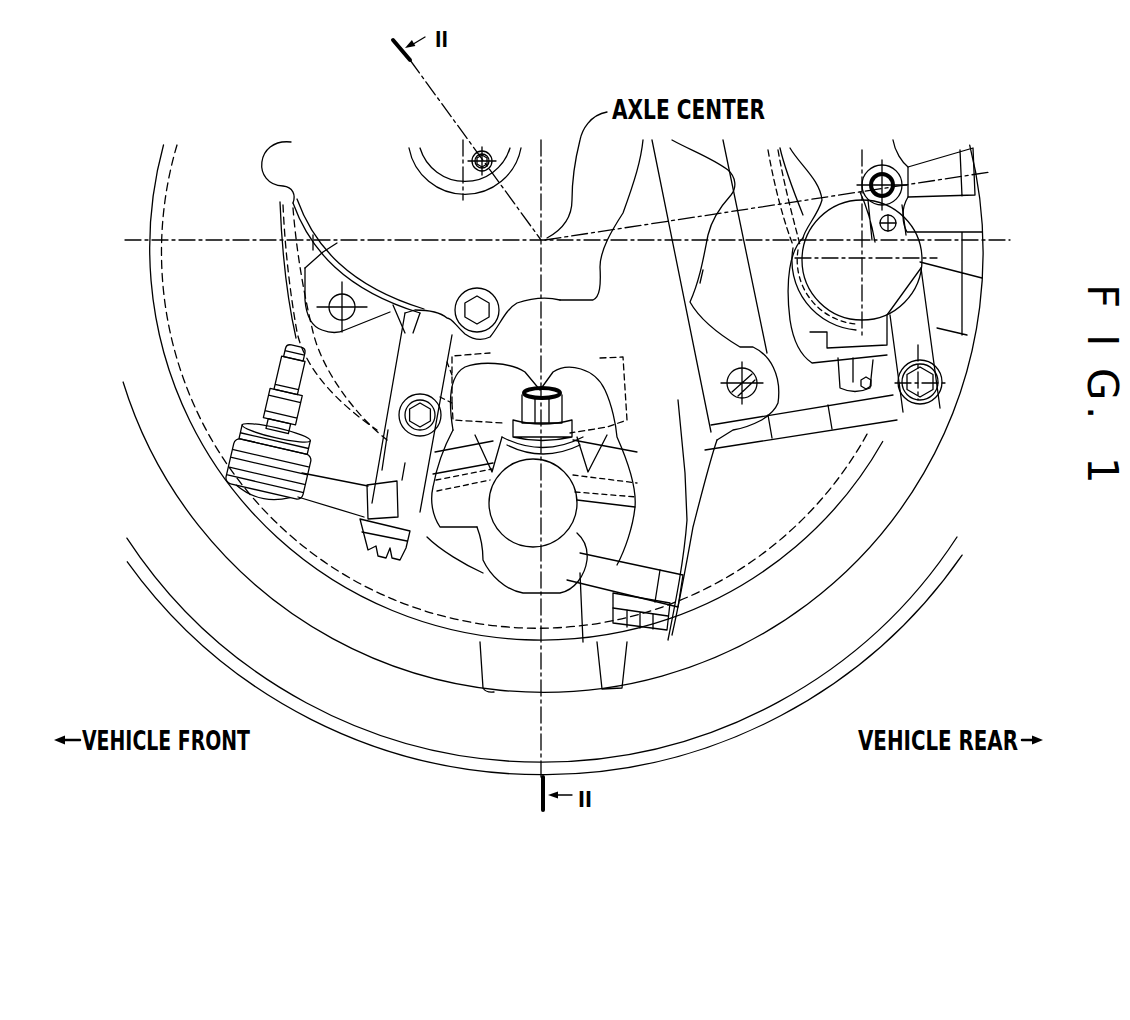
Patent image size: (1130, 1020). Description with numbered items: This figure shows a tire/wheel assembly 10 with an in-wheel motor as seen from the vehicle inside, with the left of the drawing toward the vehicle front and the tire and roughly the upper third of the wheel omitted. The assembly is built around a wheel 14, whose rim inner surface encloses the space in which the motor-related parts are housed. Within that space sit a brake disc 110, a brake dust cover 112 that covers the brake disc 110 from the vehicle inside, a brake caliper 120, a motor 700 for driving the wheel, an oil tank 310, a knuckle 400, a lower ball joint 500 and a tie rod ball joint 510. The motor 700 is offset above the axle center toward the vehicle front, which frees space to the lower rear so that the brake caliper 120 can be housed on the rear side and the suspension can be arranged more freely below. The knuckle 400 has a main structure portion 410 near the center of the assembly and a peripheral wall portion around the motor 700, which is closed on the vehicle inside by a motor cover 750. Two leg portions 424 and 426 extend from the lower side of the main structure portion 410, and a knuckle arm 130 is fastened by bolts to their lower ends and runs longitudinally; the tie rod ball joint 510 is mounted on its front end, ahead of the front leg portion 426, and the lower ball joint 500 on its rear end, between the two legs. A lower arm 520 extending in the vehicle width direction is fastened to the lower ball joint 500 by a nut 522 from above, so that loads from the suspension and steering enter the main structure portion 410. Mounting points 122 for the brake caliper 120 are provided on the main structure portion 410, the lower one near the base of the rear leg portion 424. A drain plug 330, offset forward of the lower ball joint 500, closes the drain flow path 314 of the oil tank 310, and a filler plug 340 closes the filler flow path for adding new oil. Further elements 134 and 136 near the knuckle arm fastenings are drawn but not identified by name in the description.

The tire/wheel assembly 10 is at (331, 82).
The wheel 14 is at (810, 715).
The brake disc 110 is at (707, 613).
The brake dust cover 112 is at (617, 670).
The brake caliper 120 is at (877, 440).
The mounting points 122 is at (743, 400).
The knuckle arm 130 is at (578, 673).
The bolt 134 is at (657, 627).
The nut 136 is at (392, 552).
The oil tank 310 is at (640, 404).
The drain flow path 314 is at (425, 393).
The drain plug 330 is at (377, 364).
The filler plug 340 is at (490, 291).
The knuckle 400 is at (695, 473).
The main structure portion 410 is at (595, 346).
The leg portion 424 is at (687, 520).
The leg portion 426 is at (385, 441).
The lower ball joint 500 is at (505, 570).
The tie rod ball joint 510 is at (213, 462).
The lower arm 520 is at (552, 515).
The nut 522 is at (520, 402).
The motor 700 is at (286, 172).
The motor cover 750 is at (318, 198).